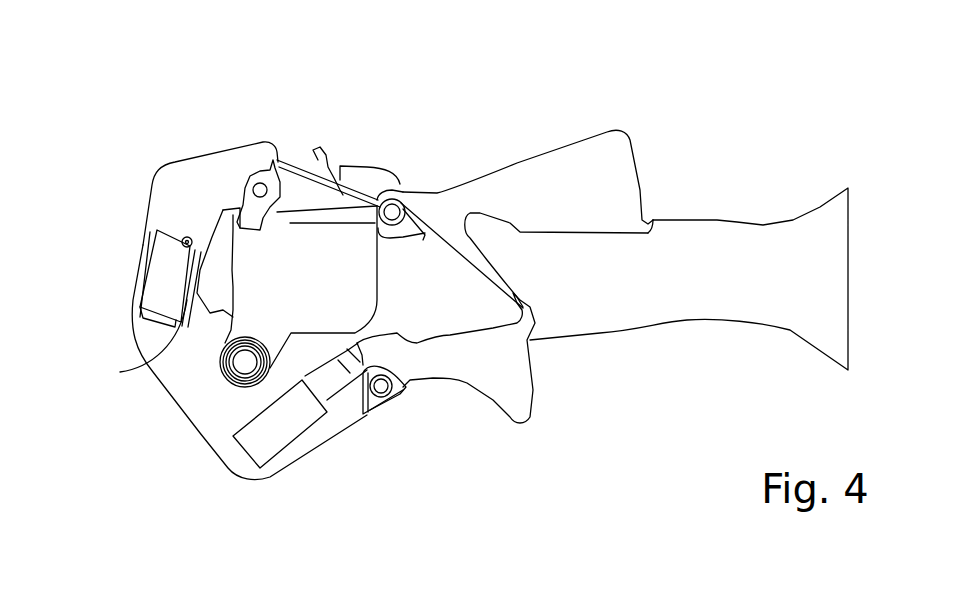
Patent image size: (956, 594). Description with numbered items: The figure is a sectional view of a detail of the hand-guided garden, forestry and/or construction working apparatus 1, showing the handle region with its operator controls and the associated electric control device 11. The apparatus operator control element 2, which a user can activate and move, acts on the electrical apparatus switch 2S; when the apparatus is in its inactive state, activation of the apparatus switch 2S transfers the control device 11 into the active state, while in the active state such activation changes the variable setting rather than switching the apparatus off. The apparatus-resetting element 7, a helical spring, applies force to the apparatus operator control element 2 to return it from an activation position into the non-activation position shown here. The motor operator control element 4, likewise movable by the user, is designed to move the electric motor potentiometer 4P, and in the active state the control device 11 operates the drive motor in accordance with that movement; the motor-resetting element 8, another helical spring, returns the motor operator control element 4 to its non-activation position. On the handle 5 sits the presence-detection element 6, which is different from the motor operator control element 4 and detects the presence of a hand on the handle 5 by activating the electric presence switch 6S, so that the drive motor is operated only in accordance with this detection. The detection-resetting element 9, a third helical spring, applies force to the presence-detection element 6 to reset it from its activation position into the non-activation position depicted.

The garden, forestry and/or construction working apparatus 1 is at (133, 112).
The apparatus operator control element 2 is at (315, 152).
The detection-resetting element 9 is at (395, 196).
The presence-detection element 6 is at (553, 163).
The handle 5 is at (690, 302).
The motor operator control element 4 is at (480, 380).
The motor potentiometer 4P is at (304, 413).
The motor-resetting element 8 is at (377, 414).
The apparatus-resetting element 7 is at (228, 380).
The control device 11 is at (274, 438).
The apparatus switch 2S is at (217, 220).
The presence switch 6S is at (197, 300).